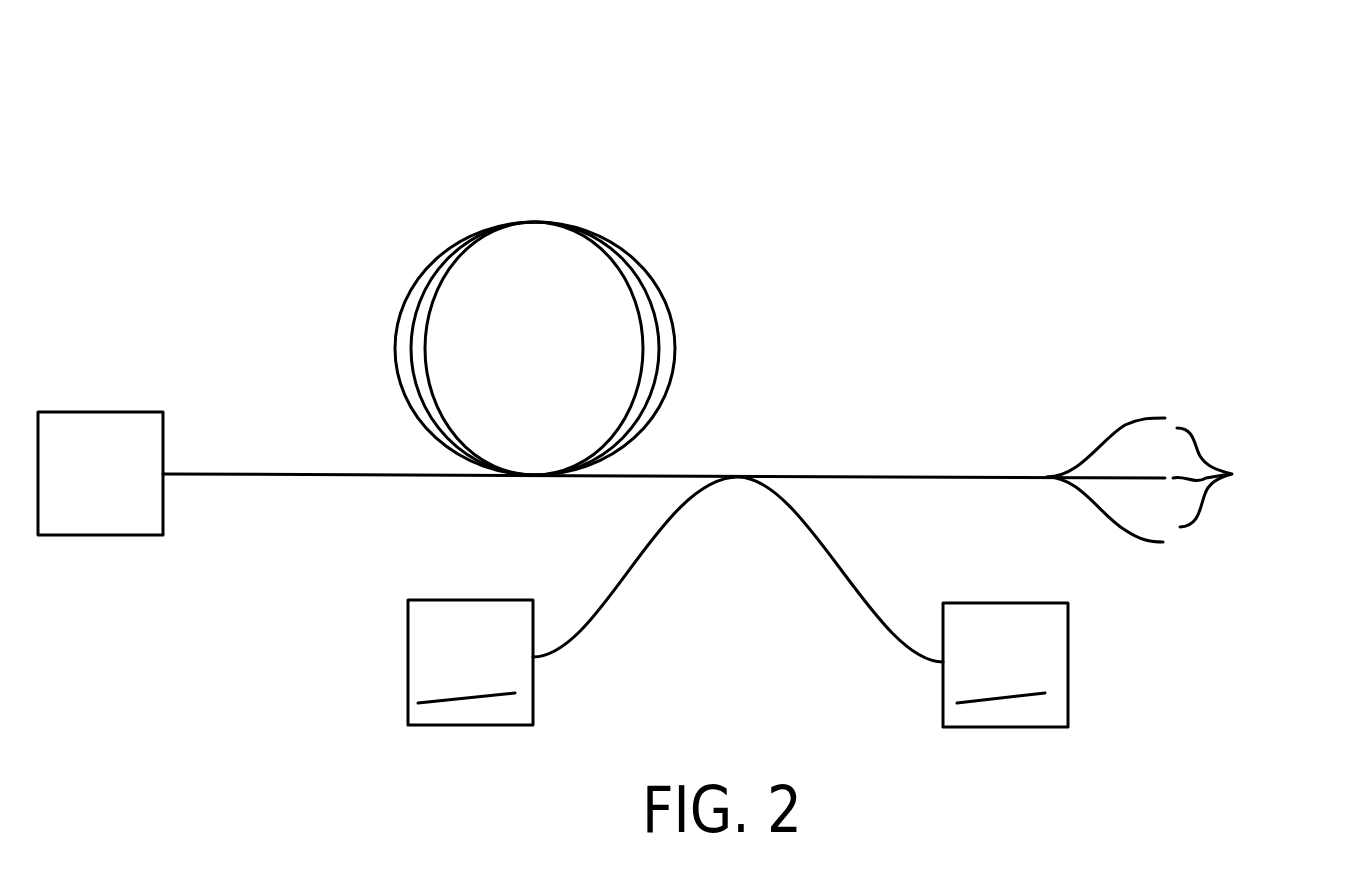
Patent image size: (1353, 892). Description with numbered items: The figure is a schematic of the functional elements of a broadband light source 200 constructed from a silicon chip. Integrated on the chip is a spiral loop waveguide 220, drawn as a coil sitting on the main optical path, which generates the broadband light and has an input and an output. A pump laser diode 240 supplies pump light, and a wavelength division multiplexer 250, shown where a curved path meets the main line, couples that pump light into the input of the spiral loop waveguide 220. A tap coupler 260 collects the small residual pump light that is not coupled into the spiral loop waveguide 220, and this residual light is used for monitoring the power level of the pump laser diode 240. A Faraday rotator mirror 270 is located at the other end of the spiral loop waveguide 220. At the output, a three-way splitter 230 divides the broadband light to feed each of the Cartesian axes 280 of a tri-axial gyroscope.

The broadband light source 200 is at (678, 128).
The spiral loop waveguide 220 is at (636, 258).
The 3-way splitter 230 is at (1040, 443).
The pump laser diode 240 is at (1005, 665).
The wavelength division multiplexer 250 is at (738, 498).
The tap coupler 260 is at (470, 662).
The Faraday rotator mirror 270 is at (100, 473).
The Cartesian axes 280 is at (1261, 477).